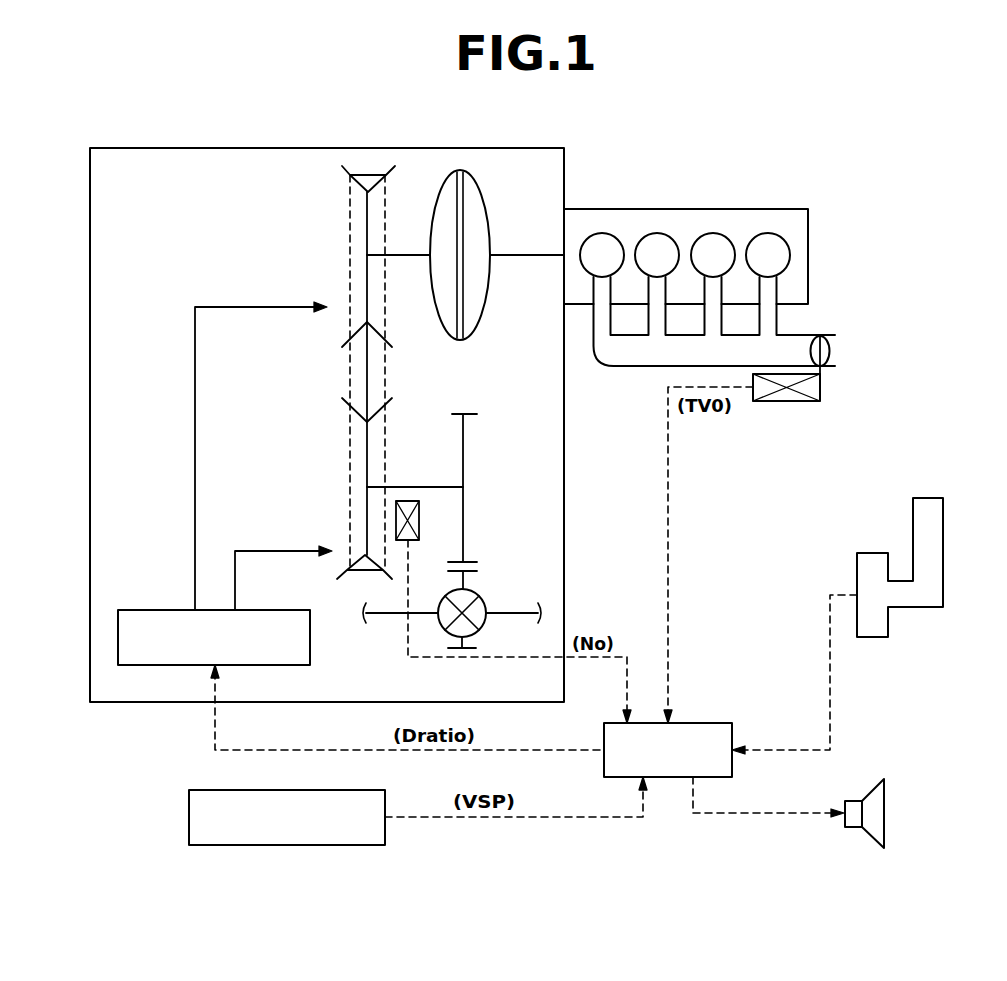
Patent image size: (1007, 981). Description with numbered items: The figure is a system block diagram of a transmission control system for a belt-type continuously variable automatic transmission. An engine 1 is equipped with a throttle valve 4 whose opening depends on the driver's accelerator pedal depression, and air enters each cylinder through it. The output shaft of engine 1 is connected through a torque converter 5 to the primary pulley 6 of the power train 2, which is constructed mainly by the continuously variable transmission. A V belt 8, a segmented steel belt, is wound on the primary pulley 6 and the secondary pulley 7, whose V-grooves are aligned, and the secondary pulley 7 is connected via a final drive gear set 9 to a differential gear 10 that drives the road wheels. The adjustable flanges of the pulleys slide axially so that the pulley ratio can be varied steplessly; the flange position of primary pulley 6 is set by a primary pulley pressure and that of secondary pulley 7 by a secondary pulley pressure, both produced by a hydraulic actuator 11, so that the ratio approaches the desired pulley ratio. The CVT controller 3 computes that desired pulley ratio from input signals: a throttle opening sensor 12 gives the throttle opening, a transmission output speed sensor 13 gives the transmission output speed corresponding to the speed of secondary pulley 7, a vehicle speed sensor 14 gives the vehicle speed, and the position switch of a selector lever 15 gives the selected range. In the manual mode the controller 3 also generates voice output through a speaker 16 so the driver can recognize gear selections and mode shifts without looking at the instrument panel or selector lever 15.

The engine 1 is at (714, 209).
The power train 2 is at (90, 302).
The CVT controller 3 is at (710, 723).
The throttle valve 4 is at (830, 350).
The torque converter 5 is at (489, 205).
The primary pulley 6 is at (343, 170).
The secondary pulley 7 is at (342, 398).
The V belt 8 is at (348, 362).
The final drive gear set 9 is at (465, 583).
The differential gear 10 is at (481, 599).
The hydraulic actuator 11 is at (150, 610).
The throttle opening sensor 12 is at (778, 403).
The transmission output speed sensor 13 is at (411, 541).
The vehicle speed sensor 14 is at (189, 817).
The selector lever 15 is at (943, 514).
The speaker 16 is at (884, 805).